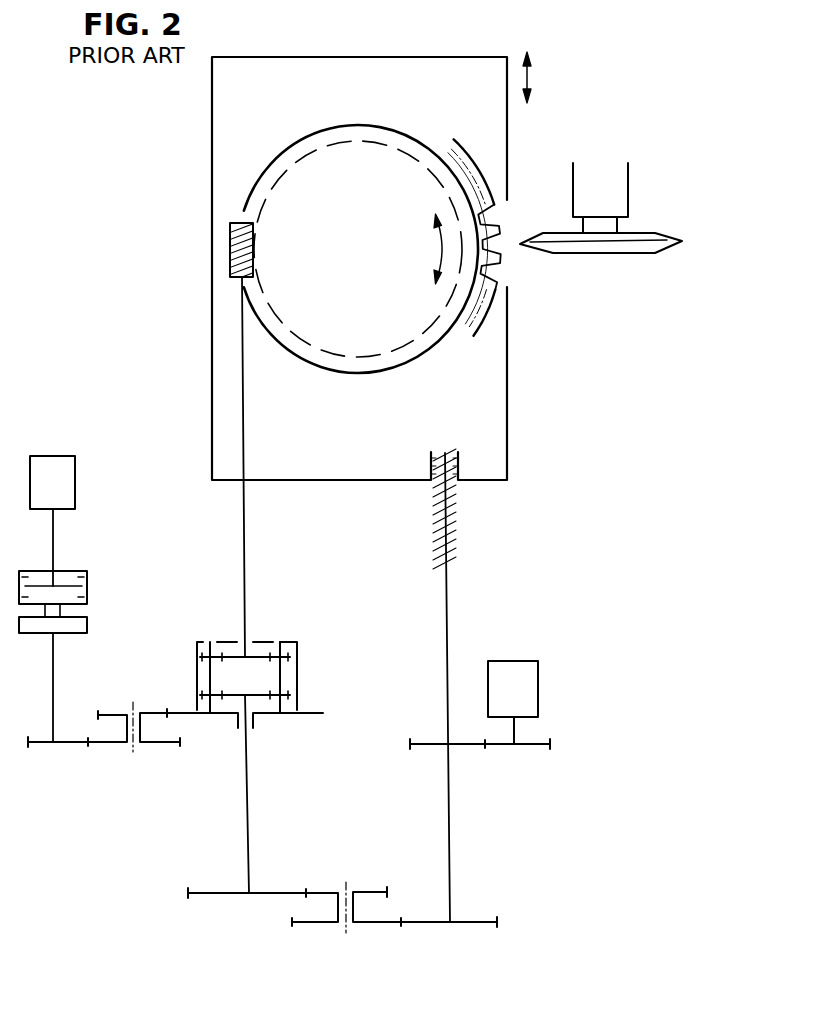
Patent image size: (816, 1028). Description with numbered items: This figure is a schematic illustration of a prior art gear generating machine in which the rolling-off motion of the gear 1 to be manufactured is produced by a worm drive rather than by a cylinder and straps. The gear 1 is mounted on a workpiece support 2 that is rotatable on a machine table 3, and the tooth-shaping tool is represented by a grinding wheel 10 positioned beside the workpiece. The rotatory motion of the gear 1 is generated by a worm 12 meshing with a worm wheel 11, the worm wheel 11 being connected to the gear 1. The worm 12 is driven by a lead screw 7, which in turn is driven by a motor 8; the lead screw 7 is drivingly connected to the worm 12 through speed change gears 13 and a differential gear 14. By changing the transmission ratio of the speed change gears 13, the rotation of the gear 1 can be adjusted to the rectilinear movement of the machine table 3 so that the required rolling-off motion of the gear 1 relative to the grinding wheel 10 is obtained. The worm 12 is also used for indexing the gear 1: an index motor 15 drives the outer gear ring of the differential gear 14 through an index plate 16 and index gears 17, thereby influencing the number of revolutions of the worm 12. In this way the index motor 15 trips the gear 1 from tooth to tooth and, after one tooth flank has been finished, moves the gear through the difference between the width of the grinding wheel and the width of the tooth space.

The gear 1 is at (488, 293).
The workpiece support 2 is at (417, 153).
The machine table 3 is at (327, 80).
The lead screw 7 is at (445, 525).
The motor 8 is at (516, 695).
The grinding wheel 10 is at (645, 240).
The worm wheel 11 is at (365, 165).
The worm 12 is at (230, 262).
The speed change gears 13 is at (418, 923).
The differential gear 14 is at (245, 678).
The index motor 15 is at (66, 483).
The index plate 16 is at (62, 600).
The index gears 17 is at (117, 745).